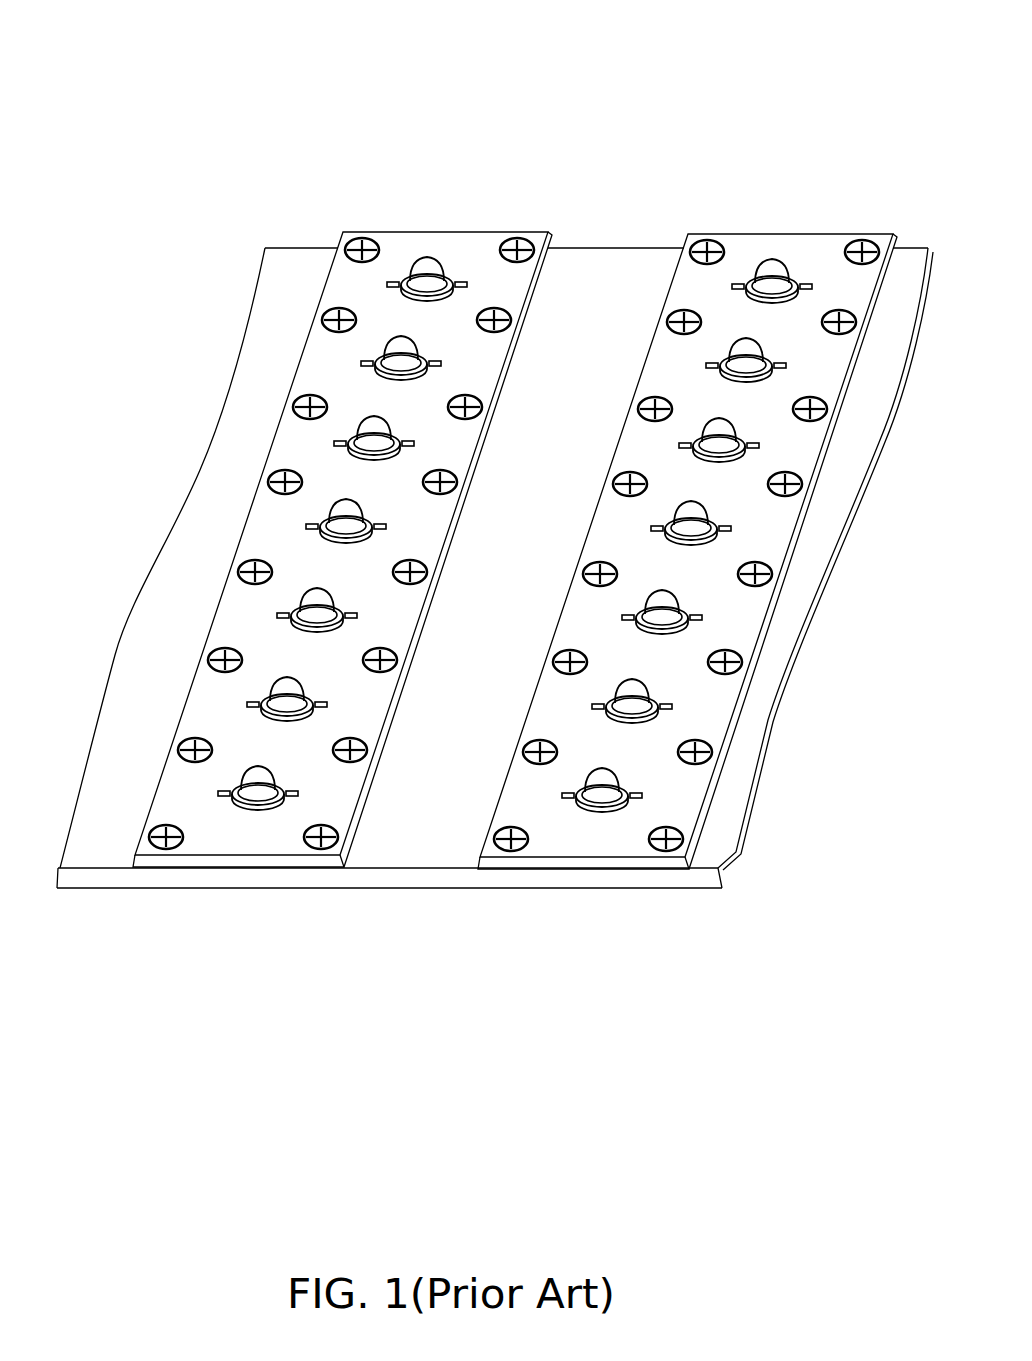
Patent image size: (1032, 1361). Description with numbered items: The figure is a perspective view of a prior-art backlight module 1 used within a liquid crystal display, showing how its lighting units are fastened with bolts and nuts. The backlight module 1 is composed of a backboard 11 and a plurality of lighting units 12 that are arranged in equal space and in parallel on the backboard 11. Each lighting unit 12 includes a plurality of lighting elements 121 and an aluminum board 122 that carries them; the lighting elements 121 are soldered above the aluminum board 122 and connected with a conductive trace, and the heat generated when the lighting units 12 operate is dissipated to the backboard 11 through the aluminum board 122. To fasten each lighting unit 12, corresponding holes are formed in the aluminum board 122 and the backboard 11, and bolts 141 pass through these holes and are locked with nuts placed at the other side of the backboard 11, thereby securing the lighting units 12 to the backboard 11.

The backlight module 1 is at (222, 100).
The backboard 11 is at (100, 822).
The lighting unit 12 is at (522, 168).
The lighting element 121 is at (423, 270).
The aluminum board 122 is at (397, 247).
The bolt 141 is at (358, 250).